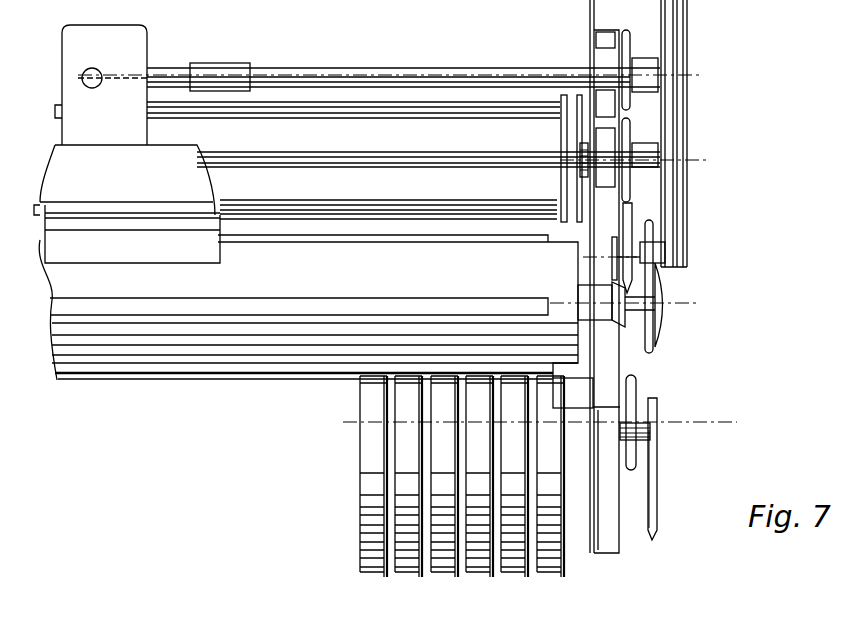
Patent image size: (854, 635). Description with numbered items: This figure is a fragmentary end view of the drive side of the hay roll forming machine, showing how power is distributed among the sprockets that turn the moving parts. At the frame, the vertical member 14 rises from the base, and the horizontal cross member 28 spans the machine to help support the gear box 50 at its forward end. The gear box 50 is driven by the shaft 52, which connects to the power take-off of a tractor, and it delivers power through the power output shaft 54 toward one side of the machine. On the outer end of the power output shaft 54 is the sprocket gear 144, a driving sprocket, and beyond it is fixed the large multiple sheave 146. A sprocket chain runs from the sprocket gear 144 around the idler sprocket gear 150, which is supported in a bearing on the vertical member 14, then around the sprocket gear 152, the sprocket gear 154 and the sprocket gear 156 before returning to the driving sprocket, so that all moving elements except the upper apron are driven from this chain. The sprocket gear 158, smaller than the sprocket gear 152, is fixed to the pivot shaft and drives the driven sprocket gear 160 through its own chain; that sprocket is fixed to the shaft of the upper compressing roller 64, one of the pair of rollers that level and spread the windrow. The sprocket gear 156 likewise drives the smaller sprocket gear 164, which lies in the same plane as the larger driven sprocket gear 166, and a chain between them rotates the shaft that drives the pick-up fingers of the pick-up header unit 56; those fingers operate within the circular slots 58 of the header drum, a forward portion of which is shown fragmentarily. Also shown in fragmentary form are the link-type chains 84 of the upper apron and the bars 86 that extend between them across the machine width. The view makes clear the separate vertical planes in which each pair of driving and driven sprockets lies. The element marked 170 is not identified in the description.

The vertical member 14 is at (592, 18).
The horizontal cross member 28 is at (172, 152).
The gear box 50 is at (137, 28).
The shaft 52 is at (85, 68).
The power output shaft 54 is at (333, 70).
The pick-up header unit 56 is at (430, 476).
The circular slots 58 is at (390, 452).
The compressing roller 64 is at (225, 353).
The link-type chains 84 is at (562, 133).
The bars 86 is at (377, 114).
The sprocket gear 144 is at (632, 43).
The large multiple sheave 146 is at (687, 65).
The idler sprocket gear 150 is at (628, 128).
The sprocket gear 152 is at (627, 207).
The sprocket gear 154 is at (645, 385).
The sprocket gear 156 is at (715, 381).
The sprocket gear 158 is at (652, 233).
The driven sprocket gear 160 is at (652, 291).
The sprocket gear 164 is at (657, 405).
The driven sprocket gear 166 is at (652, 513).
The collar 170 is at (683, 252).